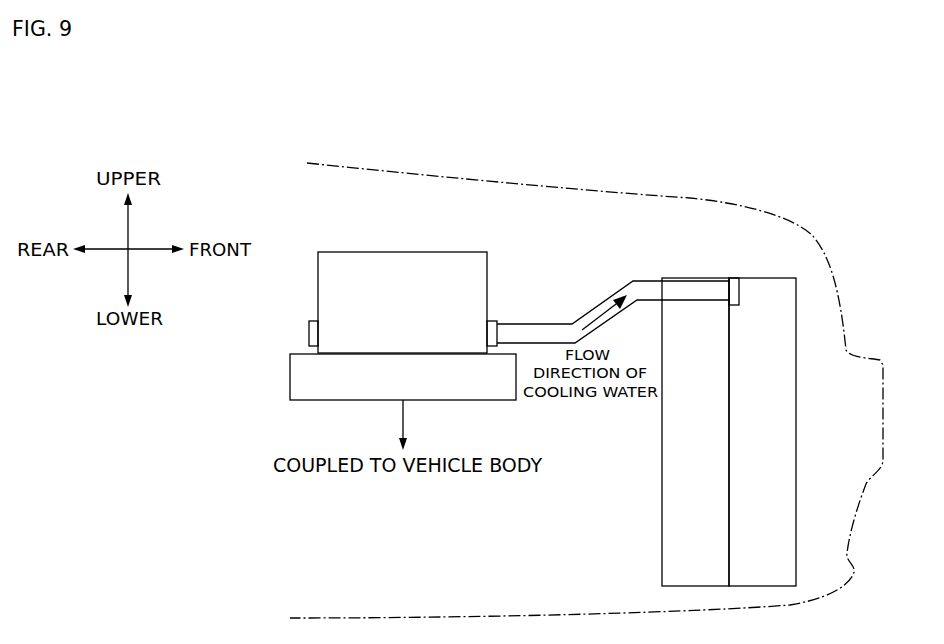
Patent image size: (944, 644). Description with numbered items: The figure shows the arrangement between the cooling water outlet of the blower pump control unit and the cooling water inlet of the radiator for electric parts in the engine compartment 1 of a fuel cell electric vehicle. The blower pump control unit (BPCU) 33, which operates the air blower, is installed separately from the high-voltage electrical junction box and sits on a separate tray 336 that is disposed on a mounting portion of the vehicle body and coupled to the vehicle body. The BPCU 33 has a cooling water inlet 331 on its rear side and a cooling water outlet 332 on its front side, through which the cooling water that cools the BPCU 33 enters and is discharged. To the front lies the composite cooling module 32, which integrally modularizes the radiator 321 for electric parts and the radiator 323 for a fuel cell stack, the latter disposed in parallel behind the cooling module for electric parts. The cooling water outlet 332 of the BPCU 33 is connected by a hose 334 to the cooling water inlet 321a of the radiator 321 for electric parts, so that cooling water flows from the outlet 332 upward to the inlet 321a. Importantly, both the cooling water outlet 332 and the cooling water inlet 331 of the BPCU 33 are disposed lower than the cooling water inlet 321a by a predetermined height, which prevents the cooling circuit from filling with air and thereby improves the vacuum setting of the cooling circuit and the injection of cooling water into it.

The engine compartment 1 is at (655, 228).
The composite cooling module 32 is at (744, 389).
The radiator for electric parts 321 is at (796, 325).
The cooling water inlet 321a is at (735, 278).
The radiator for a fuel cell stack 323 is at (675, 548).
The blower pump control unit (BPCU) 33 is at (403, 252).
The cooling water inlet 331 is at (313, 321).
The cooling water outlet 332 is at (493, 321).
The hose 334 is at (618, 288).
The tray 336 is at (290, 372).